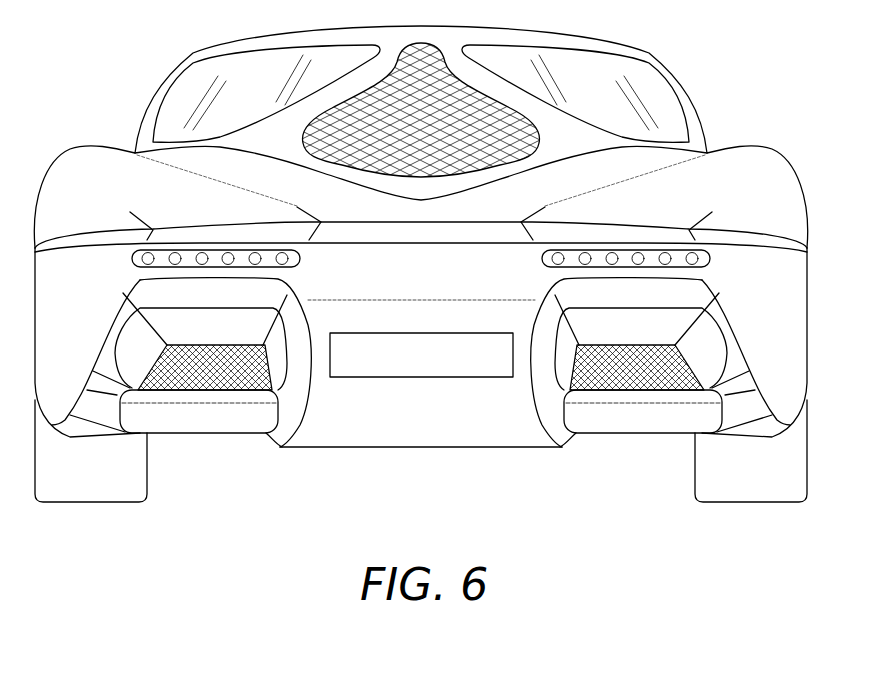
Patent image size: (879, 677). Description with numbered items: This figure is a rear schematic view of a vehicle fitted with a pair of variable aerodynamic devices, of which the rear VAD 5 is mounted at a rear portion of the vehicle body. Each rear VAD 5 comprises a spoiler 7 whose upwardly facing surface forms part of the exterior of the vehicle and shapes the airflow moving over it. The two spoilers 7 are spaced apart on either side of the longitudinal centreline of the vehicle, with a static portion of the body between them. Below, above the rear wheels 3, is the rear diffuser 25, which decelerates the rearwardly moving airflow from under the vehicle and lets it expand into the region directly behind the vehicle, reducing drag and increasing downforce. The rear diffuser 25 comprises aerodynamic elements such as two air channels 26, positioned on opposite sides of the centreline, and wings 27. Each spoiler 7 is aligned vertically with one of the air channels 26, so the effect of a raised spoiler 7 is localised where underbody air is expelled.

The rear wheels 3 is at (92, 494).
The rear variable aerodynamic device 5 is at (235, 213).
The spoiler 7 is at (193, 240).
The rear diffuser 25 is at (423, 470).
The air channels 26 is at (186, 379).
The wings 27 is at (237, 426).